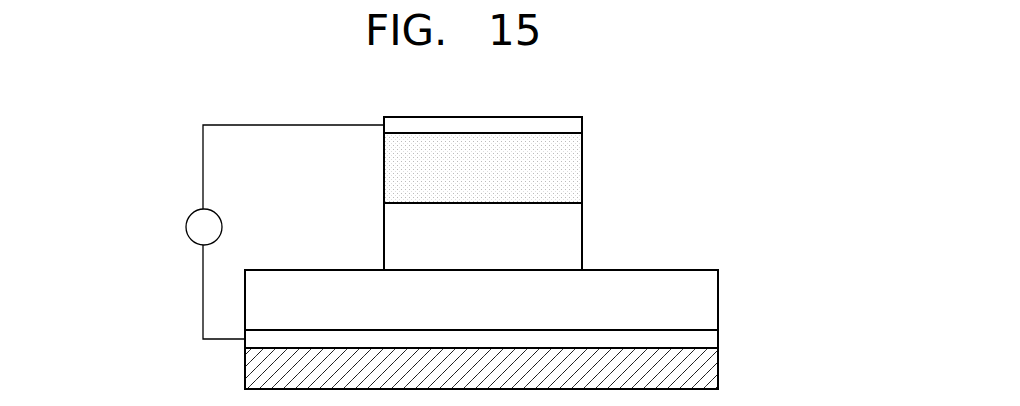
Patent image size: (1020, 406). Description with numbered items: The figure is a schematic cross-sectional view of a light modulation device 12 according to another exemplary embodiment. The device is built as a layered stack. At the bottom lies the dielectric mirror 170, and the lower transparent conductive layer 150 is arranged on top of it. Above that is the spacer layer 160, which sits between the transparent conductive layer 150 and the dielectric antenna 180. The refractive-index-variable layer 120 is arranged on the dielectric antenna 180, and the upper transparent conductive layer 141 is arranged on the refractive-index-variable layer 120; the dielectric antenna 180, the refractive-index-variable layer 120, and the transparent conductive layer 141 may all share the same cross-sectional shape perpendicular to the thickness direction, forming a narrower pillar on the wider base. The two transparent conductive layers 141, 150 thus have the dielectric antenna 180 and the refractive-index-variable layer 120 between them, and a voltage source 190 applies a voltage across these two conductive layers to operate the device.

The light modulation device 12 is at (731, 144).
The refractive-index-variable layer 120 is at (582, 167).
The transparent conductive layer 141 is at (582, 124).
The transparent conductive layer 150 is at (718, 339).
The spacer layer 160 is at (718, 298).
The dielectric mirror 170 is at (718, 368).
The dielectric antenna 180 is at (582, 236).
The voltage source 190 is at (184, 227).